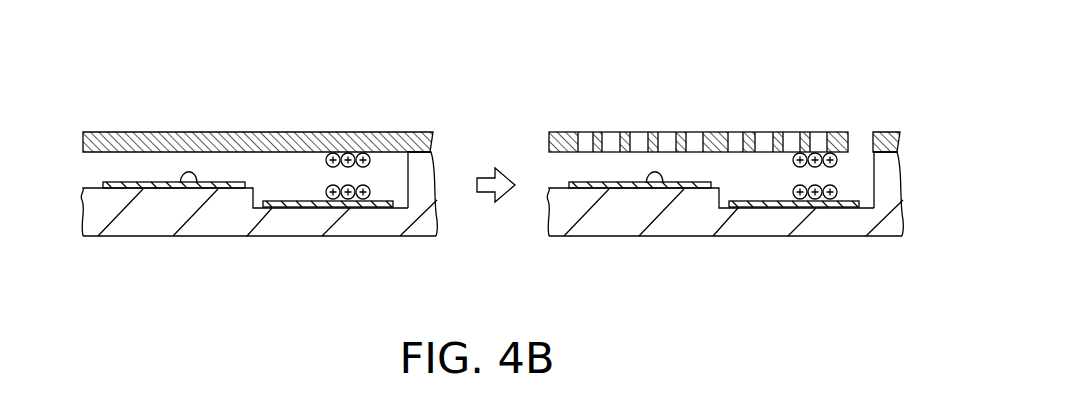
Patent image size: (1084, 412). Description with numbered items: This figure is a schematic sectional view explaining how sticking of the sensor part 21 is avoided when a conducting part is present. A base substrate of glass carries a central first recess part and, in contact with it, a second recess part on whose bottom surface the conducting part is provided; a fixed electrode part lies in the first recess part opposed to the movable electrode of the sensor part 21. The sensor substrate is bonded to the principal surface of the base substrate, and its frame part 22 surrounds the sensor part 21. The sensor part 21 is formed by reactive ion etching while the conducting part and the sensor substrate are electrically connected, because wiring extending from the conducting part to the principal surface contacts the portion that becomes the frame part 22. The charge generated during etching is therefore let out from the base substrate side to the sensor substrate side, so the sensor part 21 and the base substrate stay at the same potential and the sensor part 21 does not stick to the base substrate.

The sensor part 21 is at (715, 131).
The frame part 22 is at (898, 114).